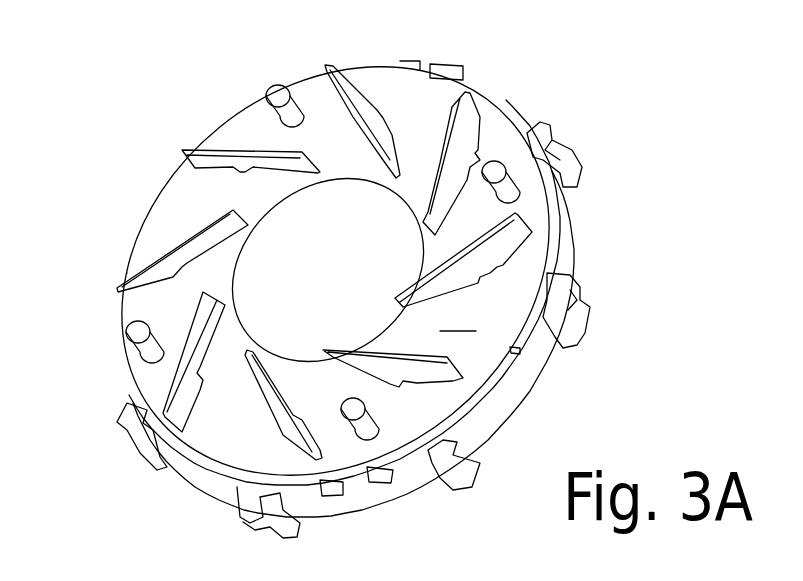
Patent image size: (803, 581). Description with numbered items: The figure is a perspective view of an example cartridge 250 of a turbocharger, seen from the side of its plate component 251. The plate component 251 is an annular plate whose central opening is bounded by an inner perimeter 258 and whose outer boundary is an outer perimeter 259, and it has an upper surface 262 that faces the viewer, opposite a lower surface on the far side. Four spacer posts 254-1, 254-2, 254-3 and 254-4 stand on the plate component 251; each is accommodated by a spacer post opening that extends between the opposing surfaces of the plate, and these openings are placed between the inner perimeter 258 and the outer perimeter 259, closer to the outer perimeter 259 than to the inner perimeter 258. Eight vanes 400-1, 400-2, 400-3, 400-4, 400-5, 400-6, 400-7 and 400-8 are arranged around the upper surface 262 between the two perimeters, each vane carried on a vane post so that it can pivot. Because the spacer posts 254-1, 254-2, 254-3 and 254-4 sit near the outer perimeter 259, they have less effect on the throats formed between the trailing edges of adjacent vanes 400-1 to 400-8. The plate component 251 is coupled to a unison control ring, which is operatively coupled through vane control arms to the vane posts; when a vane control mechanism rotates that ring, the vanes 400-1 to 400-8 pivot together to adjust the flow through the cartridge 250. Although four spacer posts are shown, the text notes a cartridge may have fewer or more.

The cartridge 250 is at (156, 70).
The plate component 251 is at (160, 218).
The spacer post 254-1 is at (277, 88).
The spacer post 254-2 is at (510, 184).
The spacer post 254-3 is at (362, 430).
The spacer post 254-4 is at (137, 337).
The inner perimeter 258 is at (258, 228).
The outer perimeter 259 is at (518, 328).
The upper surface 262 is at (458, 321).
The vane 400-1 is at (348, 77).
The vane 400-2 is at (473, 118).
The vane 400-3 is at (514, 238).
The vane 400-4 is at (442, 378).
The vane 400-5 is at (277, 421).
The vane 400-6 is at (170, 398).
The vane 400-7 is at (153, 264).
The vane 400-8 is at (192, 150).